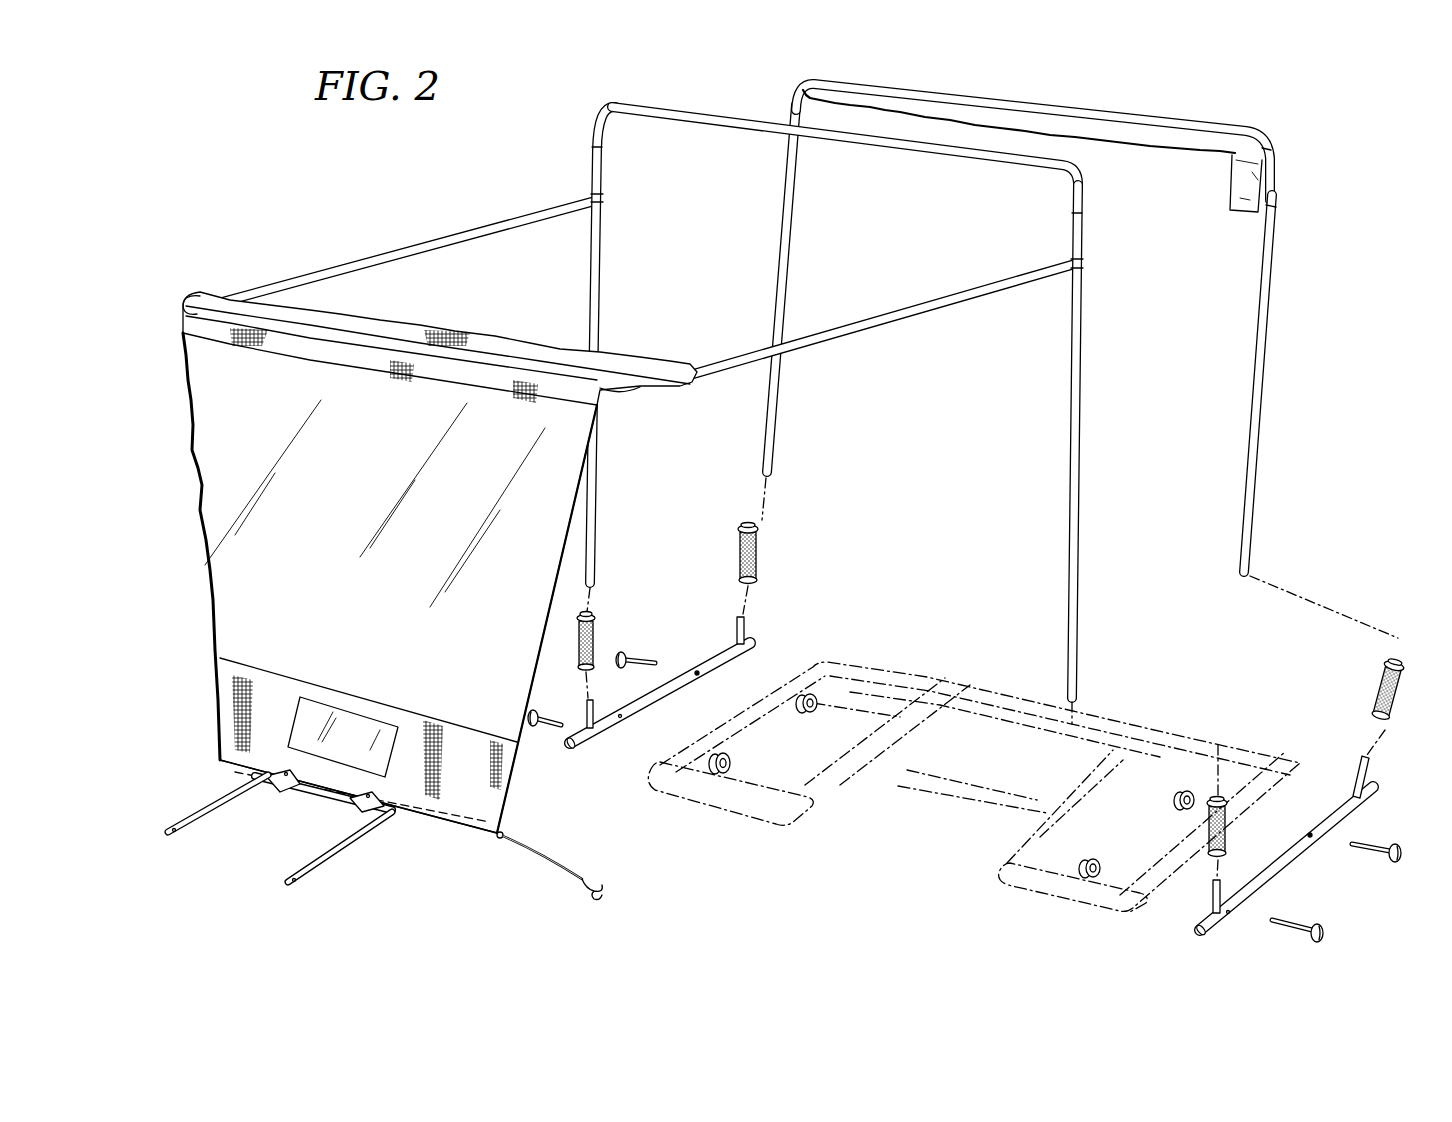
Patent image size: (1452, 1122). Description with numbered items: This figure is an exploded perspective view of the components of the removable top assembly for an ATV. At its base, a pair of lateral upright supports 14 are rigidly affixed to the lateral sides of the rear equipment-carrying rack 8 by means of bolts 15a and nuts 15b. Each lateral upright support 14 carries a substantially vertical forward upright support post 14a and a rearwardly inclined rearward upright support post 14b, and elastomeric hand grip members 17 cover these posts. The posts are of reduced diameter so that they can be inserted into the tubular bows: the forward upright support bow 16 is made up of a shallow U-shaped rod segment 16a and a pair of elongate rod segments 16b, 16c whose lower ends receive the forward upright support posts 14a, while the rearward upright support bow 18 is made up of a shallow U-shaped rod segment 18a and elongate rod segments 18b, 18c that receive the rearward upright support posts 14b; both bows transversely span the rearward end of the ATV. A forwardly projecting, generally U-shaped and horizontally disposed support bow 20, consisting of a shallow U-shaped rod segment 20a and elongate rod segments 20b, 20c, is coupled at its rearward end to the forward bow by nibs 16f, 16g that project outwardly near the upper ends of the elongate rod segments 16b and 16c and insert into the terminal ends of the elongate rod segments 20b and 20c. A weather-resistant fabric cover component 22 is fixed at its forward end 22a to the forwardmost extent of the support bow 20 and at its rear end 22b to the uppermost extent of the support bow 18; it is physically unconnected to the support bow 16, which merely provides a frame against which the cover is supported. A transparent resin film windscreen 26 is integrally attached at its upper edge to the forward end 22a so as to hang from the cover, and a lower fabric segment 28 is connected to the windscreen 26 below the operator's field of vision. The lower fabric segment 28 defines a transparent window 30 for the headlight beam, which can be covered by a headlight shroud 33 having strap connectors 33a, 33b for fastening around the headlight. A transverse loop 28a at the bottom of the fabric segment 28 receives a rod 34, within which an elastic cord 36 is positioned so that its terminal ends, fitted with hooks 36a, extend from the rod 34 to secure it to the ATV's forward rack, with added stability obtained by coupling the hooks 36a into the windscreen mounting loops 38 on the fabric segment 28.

The rear equipment-carrying rack 8 is at (843, 655).
The lateral upright support 14 is at (703, 668).
The forward upright support post 14a is at (585, 714).
The rearward upright support post 14b is at (745, 627).
The bolt 15a is at (625, 655).
The nut 15b is at (800, 698).
The forward upright support bow 16 is at (861, 379).
The shallow U-shaped rod segment 16a is at (636, 106).
The elongate rod segment 16b is at (1083, 371).
The elongate rod segment 16c is at (603, 282).
The nib 16f is at (1083, 266).
The nib 16g is at (603, 203).
The hand grip member 17 is at (597, 618).
The rearward upright support bow 18 is at (1043, 304).
The shallow U-shaped rod segment 18a is at (802, 95).
The elongate rod segment 18b is at (1265, 328).
The elongate rod segment 18c is at (788, 265).
The horizontal support bow 20 is at (637, 271).
The shallow U-shaped rod segment 20a is at (621, 392).
The elongate rod segment 20b is at (893, 323).
The elongate rod segment 20c is at (497, 212).
The fabric cover component 22 is at (1181, 152).
The forward end of fabric cover component 22a is at (385, 350).
The rear end of fabric cover component 22b is at (1237, 139).
The windscreen 26 is at (322, 612).
The lower fabric segment 28 is at (446, 761).
The transverse loop 28a is at (393, 818).
The window 30 is at (333, 759).
The headlight shroud 33 is at (291, 794).
The strap connector 33a is at (212, 806).
The strap connector 33b is at (345, 852).
The rod 34 is at (506, 832).
The elastic cord 36 is at (545, 860).
The hook 36a is at (608, 890).
The windscreen mounting loop 38 is at (268, 786).